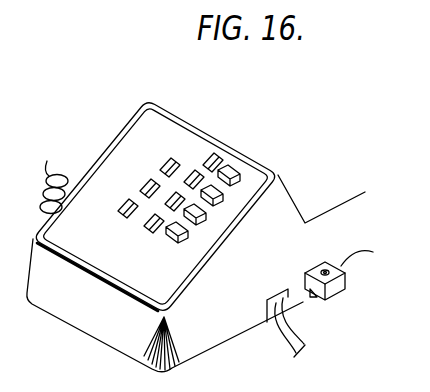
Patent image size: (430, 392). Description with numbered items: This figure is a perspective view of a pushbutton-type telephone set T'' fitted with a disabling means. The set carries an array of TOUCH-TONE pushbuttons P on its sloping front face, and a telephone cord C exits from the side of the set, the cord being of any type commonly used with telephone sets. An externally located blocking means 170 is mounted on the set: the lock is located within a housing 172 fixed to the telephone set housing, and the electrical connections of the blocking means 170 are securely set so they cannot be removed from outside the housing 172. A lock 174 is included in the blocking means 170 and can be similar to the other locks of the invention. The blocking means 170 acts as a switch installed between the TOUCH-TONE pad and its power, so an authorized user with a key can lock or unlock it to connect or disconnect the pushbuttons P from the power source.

The telephone set T'' is at (196, 214).
The TOUCH-TONE pushbuttons P is at (250, 154).
The blocking means 170 is at (359, 244).
The housing 172 is at (341, 283).
The lock 174 is at (369, 186).
The telephone cord C is at (301, 339).